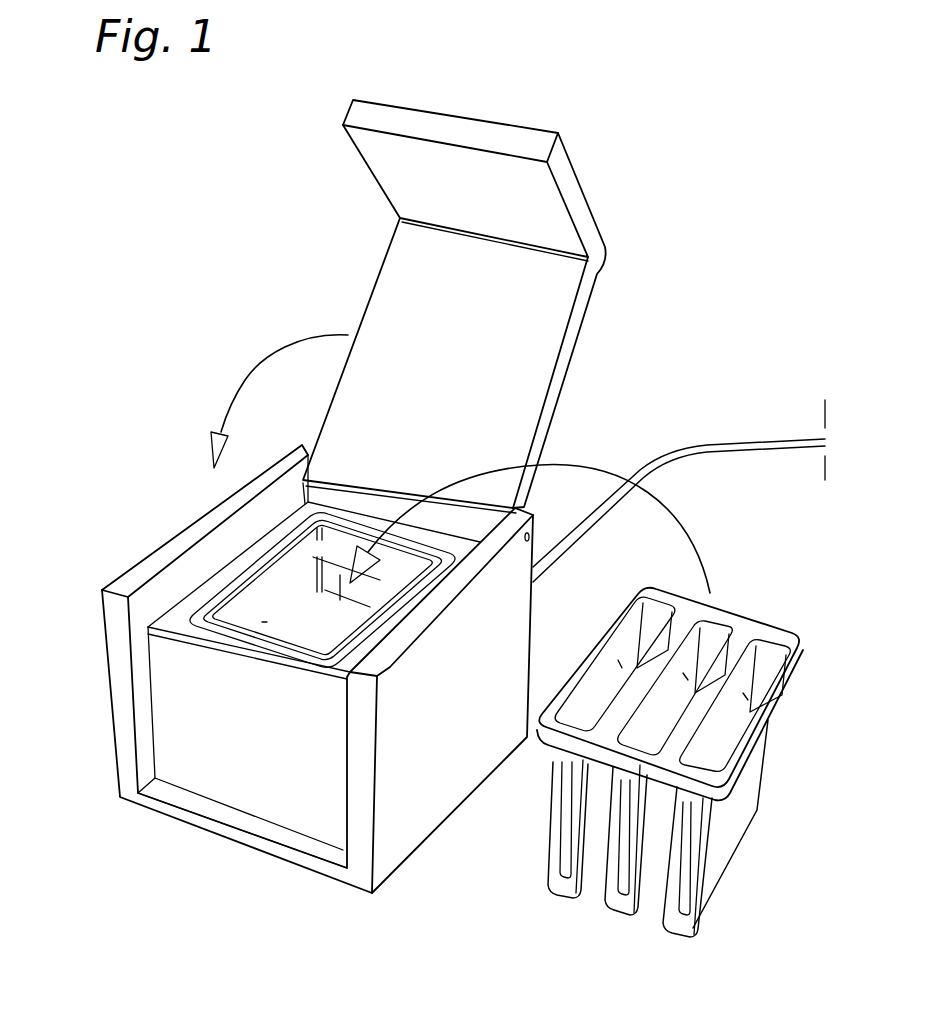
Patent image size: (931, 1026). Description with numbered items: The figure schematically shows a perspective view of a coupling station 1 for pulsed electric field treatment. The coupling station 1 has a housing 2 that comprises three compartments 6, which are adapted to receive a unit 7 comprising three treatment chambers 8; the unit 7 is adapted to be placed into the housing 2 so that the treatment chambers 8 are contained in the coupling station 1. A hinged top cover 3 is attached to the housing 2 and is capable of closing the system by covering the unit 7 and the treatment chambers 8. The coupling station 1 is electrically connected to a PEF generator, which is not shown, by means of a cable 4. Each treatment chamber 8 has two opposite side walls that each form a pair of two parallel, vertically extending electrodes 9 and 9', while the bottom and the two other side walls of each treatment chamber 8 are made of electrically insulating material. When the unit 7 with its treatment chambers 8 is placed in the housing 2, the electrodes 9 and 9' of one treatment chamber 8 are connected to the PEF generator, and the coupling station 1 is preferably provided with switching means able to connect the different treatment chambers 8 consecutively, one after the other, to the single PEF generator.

The coupling station 1 is at (216, 320).
The housing 2 is at (247, 773).
The hinged top cover 3 is at (563, 357).
The cable 4 is at (699, 442).
The compartments 6 is at (365, 650).
The unit 7 is at (757, 858).
The treatment chambers 8 is at (650, 623).
The electrodes 9 is at (640, 875).
The electrodes 9' is at (696, 642).